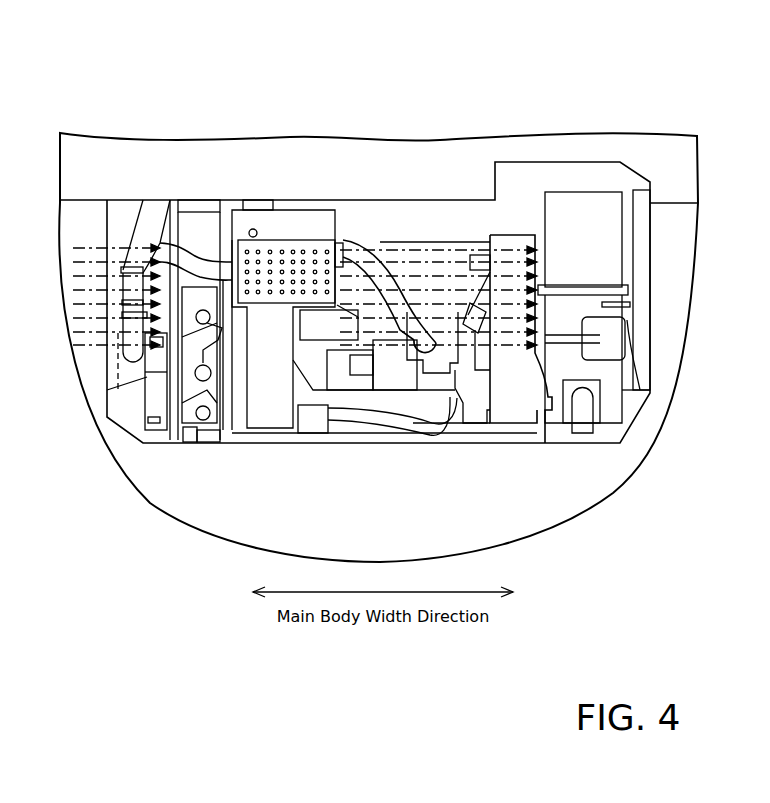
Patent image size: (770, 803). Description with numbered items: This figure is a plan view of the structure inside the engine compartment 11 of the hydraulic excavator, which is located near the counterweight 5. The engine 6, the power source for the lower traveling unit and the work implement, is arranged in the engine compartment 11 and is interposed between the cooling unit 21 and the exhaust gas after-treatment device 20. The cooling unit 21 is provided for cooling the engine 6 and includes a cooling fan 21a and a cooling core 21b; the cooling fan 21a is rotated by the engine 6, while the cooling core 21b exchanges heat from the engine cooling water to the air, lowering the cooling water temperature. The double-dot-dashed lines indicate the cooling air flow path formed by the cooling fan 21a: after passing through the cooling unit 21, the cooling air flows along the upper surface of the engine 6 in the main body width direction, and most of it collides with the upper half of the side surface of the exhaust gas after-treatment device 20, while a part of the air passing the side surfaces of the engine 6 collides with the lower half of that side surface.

The counterweight 5 is at (217, 523).
The engine compartment 11 is at (475, 162).
The engine 6 is at (443, 262).
The exhaust gas after-treatment device 20 is at (590, 207).
The cooling unit 21 is at (268, 86).
The cooling fan 21a is at (260, 205).
The cooling core 21b is at (193, 203).